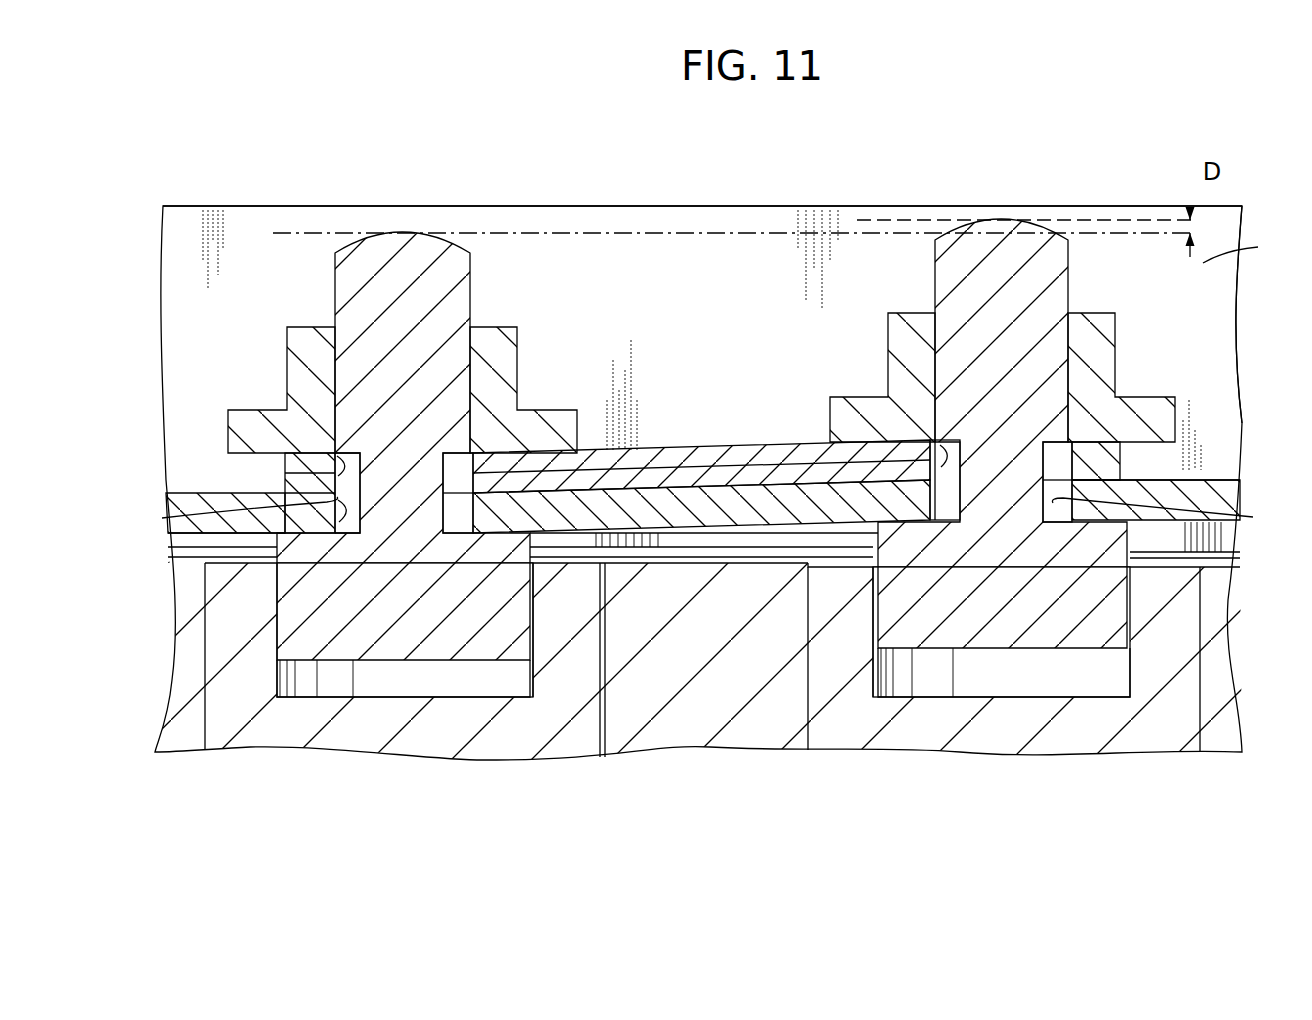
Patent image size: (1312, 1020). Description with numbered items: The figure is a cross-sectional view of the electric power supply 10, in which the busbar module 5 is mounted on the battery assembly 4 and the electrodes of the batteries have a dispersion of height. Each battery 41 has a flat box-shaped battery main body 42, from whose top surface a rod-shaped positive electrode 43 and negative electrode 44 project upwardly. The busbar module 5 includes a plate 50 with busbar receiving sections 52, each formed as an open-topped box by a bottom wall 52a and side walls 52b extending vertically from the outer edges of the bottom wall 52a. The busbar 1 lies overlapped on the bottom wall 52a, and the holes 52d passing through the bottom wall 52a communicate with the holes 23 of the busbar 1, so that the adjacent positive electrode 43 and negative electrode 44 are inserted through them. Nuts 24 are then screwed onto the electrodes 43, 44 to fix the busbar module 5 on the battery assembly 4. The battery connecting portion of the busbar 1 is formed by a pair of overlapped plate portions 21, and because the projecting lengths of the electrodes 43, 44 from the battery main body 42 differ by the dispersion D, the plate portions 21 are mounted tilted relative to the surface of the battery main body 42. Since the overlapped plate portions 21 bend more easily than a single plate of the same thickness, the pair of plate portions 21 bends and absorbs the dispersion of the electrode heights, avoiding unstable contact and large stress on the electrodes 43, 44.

The busbar 1 is at (687, 436).
The plate portion 21 is at (737, 453).
The hole 23 is at (337, 452).
The nut 24 is at (303, 326).
The battery assembly 4 is at (1231, 712).
The battery 41 is at (252, 748).
The battery main body 42 is at (407, 727).
The positive electrode 43 is at (470, 292).
The negative electrode 44 is at (1070, 294).
The busbar module 5 is at (1241, 287).
The plate 50 is at (1242, 403).
The busbar receiving section 52 is at (1220, 466).
The bottom wall 52a is at (1213, 497).
The side wall 52b is at (1253, 249).
The hole 52d is at (707, 515).
The electric power supply 10 is at (1138, 200).